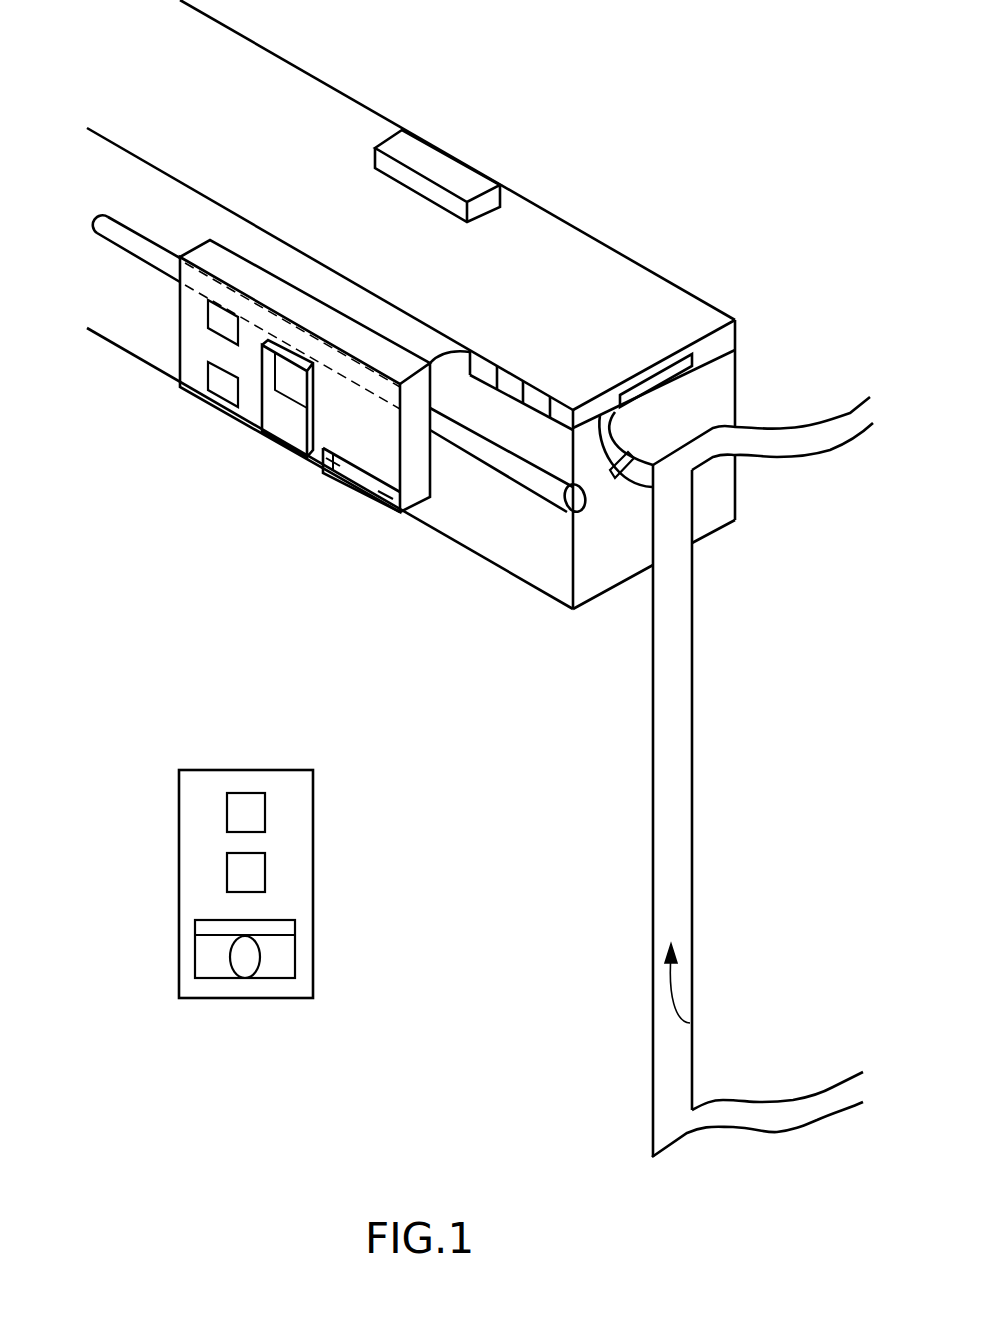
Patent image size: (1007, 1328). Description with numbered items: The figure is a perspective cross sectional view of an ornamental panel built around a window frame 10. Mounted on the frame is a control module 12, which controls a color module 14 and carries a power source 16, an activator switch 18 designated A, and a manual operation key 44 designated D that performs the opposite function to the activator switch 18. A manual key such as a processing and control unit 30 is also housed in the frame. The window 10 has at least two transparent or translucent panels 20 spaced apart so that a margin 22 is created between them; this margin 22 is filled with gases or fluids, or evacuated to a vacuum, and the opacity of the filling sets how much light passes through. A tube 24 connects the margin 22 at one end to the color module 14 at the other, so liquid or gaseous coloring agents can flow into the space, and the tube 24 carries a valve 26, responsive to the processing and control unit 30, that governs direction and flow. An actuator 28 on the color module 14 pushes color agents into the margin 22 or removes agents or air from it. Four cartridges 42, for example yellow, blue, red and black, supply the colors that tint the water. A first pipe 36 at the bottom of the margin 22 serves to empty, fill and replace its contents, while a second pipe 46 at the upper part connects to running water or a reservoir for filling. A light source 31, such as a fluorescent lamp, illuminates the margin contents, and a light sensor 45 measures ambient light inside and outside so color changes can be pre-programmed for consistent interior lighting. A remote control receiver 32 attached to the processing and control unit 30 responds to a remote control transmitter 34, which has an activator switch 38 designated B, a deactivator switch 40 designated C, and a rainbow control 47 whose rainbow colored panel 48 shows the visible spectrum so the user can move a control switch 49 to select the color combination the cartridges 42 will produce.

The window frame 10 is at (474, 304).
The control module 12 is at (195, 245).
The color module 14 is at (738, 332).
The power source 16 is at (358, 492).
The activator switch 18 is at (208, 320).
The transparent or translucent panels 20 is at (653, 720).
The margin 22 is at (690, 1023).
The tube 24 is at (614, 415).
The valve 26 is at (612, 478).
The actuator 28 is at (658, 372).
The processing and control unit 30 is at (281, 447).
The light source 31 is at (557, 500).
The remote control receiver 32 is at (288, 372).
The remote control transmitter 34 is at (278, 1000).
The first pipe 36 is at (853, 1094).
The activator switch 38 is at (245, 790).
The deactivator switch 40 is at (265, 873).
The cartridges 42 is at (565, 412).
The manual operation key 44 is at (208, 370).
The light sensor 45 is at (448, 150).
The second pipe 46 is at (860, 417).
The rainbow control 47 is at (295, 957).
The rainbow colored panel 48 is at (295, 928).
The control switch 49 is at (213, 958).